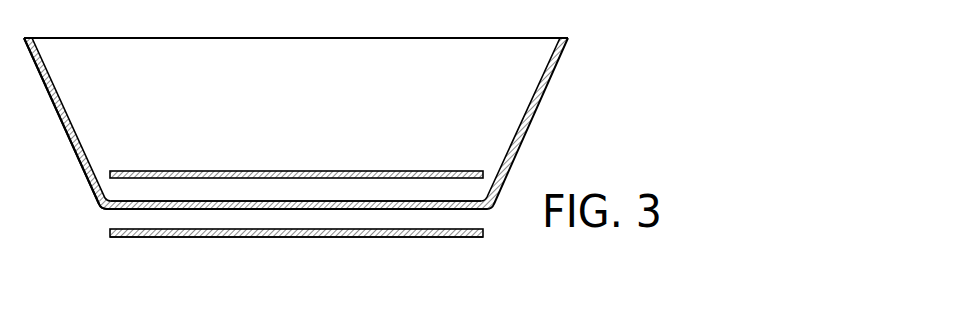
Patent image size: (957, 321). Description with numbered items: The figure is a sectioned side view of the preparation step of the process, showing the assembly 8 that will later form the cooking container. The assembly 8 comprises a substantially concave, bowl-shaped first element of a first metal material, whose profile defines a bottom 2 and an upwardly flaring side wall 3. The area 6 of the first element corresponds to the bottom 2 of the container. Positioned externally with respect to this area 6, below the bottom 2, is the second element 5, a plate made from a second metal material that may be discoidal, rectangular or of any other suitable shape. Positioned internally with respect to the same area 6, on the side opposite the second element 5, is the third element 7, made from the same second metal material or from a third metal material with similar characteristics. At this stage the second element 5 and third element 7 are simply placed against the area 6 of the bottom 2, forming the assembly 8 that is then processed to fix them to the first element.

The bottom 2 is at (233, 240).
The side wall 3 is at (558, 84).
The second element 5 is at (407, 238).
The area 6 is at (348, 206).
The third element 7 is at (405, 171).
The assembly 8 is at (69, 145).